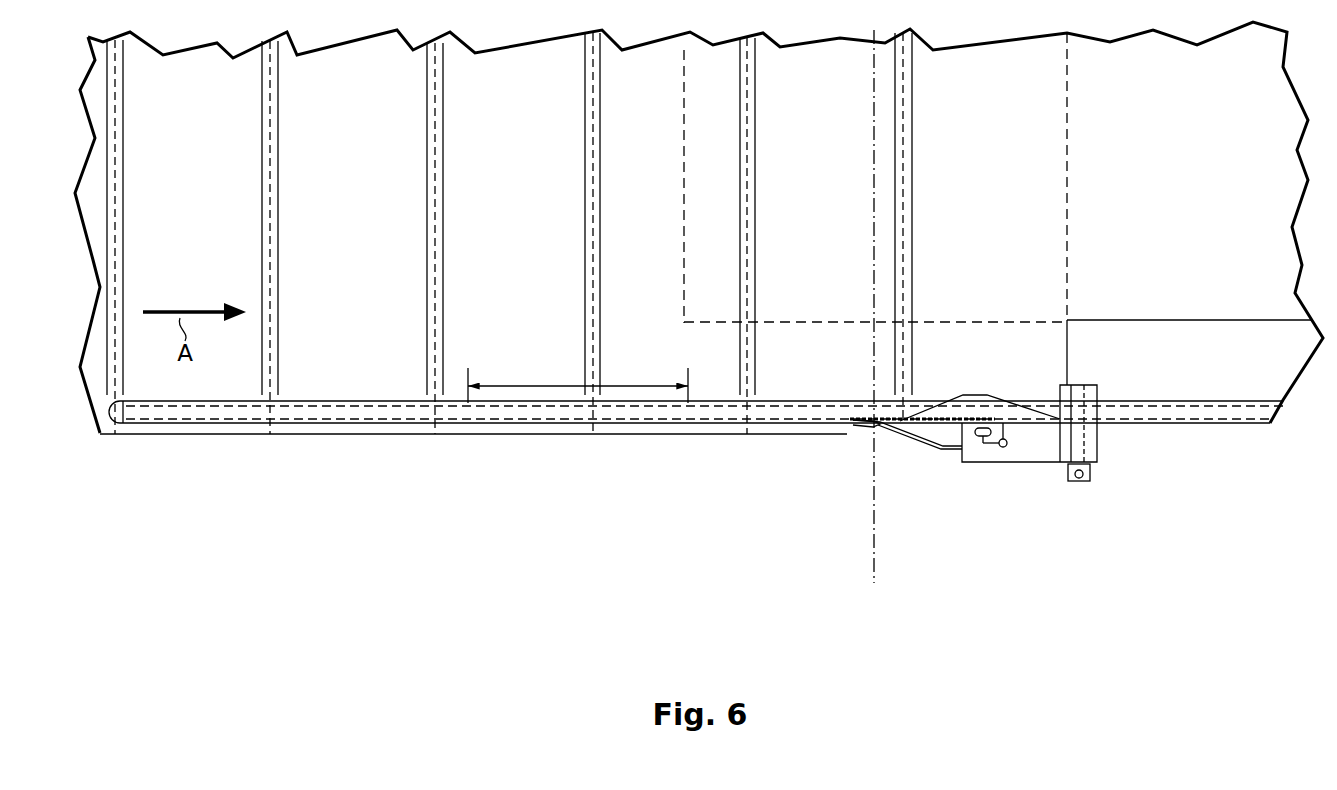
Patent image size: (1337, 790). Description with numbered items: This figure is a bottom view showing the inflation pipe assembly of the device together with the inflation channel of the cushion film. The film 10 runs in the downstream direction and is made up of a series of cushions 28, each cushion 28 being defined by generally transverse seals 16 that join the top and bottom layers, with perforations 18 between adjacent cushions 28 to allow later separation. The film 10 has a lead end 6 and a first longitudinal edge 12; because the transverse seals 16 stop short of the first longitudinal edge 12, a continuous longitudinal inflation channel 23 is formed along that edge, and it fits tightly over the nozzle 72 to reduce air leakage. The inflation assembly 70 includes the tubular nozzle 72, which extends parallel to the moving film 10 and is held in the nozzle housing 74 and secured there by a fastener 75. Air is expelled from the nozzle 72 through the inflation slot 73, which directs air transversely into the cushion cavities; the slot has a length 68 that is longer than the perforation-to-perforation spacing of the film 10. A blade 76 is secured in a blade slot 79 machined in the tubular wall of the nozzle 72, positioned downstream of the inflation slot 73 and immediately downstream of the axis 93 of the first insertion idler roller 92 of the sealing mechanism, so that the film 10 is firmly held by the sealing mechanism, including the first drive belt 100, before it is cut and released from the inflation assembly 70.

The lead end 6 is at (1067, 198).
The film 10 is at (795, 450).
The first longitudinal edge 12 is at (627, 433).
The transverse seals 16 is at (123, 176).
The perforations 18 is at (119, 121).
The inflation channel 23 is at (692, 426).
The cushion 28 is at (180, 283).
The length of inflation slot 68 is at (535, 385).
The inflation assembly 70 is at (1002, 472).
The nozzle 72 is at (563, 421).
The inflation slot 73 is at (505, 403).
The nozzle housing 74 is at (1027, 463).
The fastener 75 is at (1090, 473).
The blade 76 is at (918, 442).
The blade slot 79 is at (848, 432).
The first insertion idler roller 92 is at (1042, 142).
The axis 93 is at (876, 567).
The first drive belt 100 is at (1190, 191).